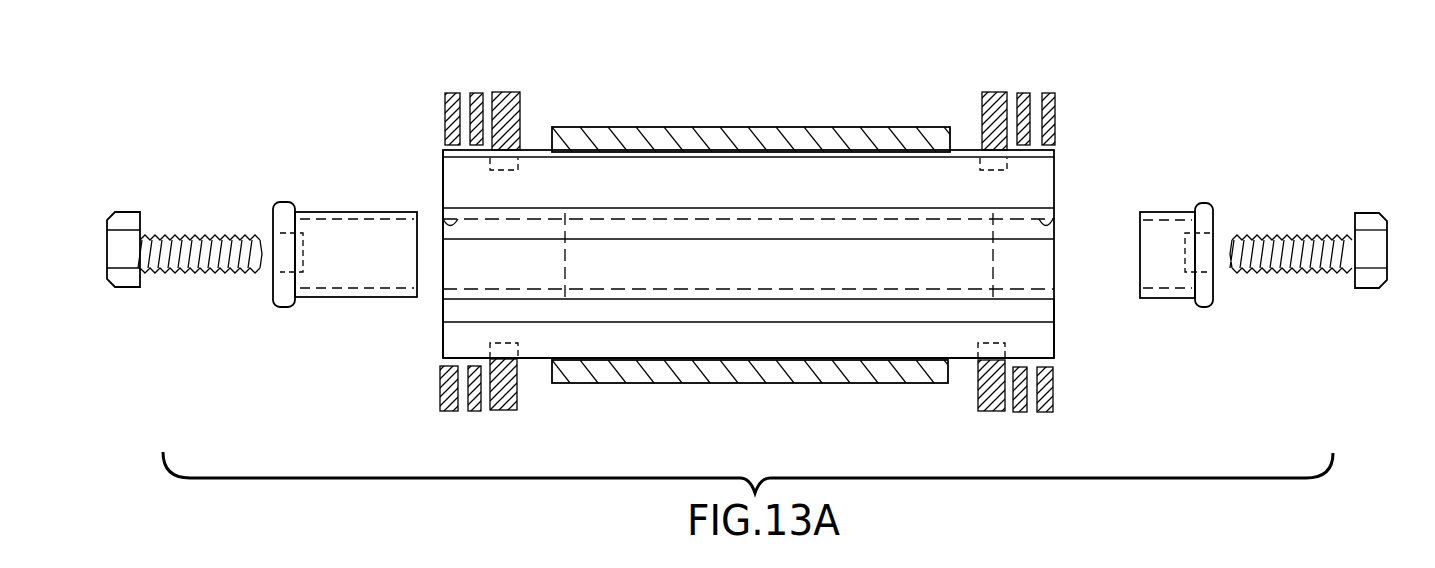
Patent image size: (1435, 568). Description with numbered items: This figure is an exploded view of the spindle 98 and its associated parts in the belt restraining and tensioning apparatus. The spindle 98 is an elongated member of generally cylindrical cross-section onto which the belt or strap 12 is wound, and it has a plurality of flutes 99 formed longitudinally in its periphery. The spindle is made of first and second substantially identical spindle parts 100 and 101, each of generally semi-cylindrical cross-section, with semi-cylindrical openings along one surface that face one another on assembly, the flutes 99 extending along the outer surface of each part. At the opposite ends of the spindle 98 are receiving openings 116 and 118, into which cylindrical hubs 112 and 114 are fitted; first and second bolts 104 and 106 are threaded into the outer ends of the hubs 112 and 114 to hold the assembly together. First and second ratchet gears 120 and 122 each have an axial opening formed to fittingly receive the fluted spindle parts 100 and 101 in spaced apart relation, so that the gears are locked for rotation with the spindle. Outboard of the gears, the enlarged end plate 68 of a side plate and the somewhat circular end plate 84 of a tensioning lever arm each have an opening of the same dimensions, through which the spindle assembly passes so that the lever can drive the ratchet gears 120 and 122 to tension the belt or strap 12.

The belt or strap 12 is at (715, 128).
The end plate 68 is at (445, 117).
The end plate 84 is at (477, 92).
The spindle 98 is at (1015, 180).
The flutes 99 is at (453, 310).
The first spindle part 100 is at (443, 181).
The second spindle part 101 is at (1056, 337).
The first bolt 104 is at (186, 186).
The second bolt 106 is at (1365, 213).
The cylindrical hub 112 is at (290, 203).
The cylindrical hub 114 is at (1192, 205).
The receiving opening 116 is at (447, 226).
The receiving opening 118 is at (1050, 226).
The first ratchet gear 120 is at (503, 92).
The second ratchet gear 122 is at (993, 92).